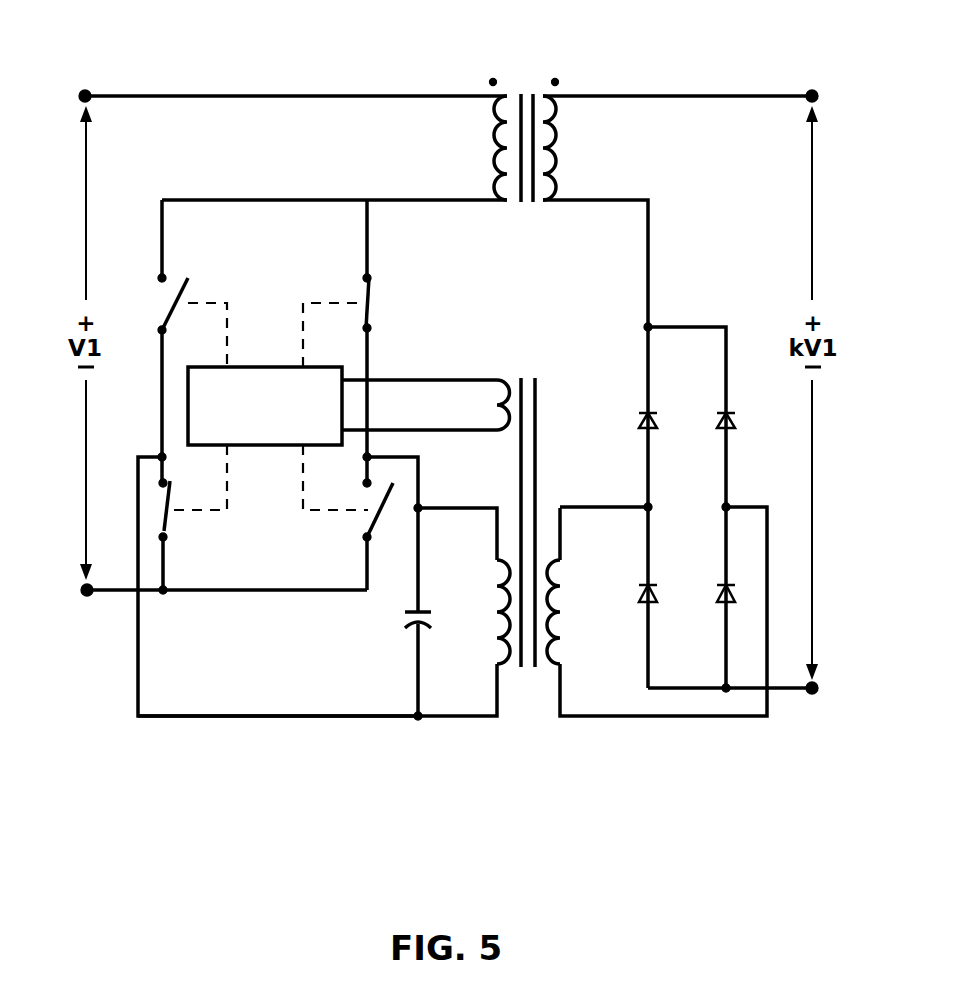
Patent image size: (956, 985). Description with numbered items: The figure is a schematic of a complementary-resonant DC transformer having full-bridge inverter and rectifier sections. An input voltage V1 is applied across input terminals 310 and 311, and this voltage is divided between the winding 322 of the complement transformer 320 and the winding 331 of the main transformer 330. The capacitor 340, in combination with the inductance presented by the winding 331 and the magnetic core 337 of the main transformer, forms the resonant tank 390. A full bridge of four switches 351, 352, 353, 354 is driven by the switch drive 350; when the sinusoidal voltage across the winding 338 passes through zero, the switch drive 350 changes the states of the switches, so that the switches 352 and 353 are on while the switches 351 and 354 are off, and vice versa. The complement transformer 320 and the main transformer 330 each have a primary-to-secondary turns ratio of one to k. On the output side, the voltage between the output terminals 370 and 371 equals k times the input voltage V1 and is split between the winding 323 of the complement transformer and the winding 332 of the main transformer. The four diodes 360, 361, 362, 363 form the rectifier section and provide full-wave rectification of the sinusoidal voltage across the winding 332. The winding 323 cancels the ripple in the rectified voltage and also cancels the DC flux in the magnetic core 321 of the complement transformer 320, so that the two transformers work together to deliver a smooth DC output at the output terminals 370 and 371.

The input terminal 310 is at (98, 92).
The input terminal 311 is at (101, 598).
The complement transformer 320 is at (528, 127).
The magnetic core 321 is at (526, 206).
The winding 322 is at (479, 98).
The winding 323 is at (570, 98).
The main transformer 330 is at (481, 552).
The winding 331 is at (494, 560).
The winding 332 is at (563, 560).
The magnetic core 337 is at (540, 390).
The winding 338 is at (494, 378).
The capacitor 340 is at (411, 632).
The switch drive 350 is at (291, 367).
The switch 351 is at (192, 282).
The switch 352 is at (365, 290).
The switch 353 is at (170, 523).
The switch 354 is at (375, 520).
The diode 360 is at (645, 440).
The diode 361 is at (722, 440).
The diode 362 is at (645, 612).
The diode 363 is at (722, 612).
The output terminal 370 is at (800, 92).
The output terminal 371 is at (813, 698).
The resonant tank 390 is at (378, 675).